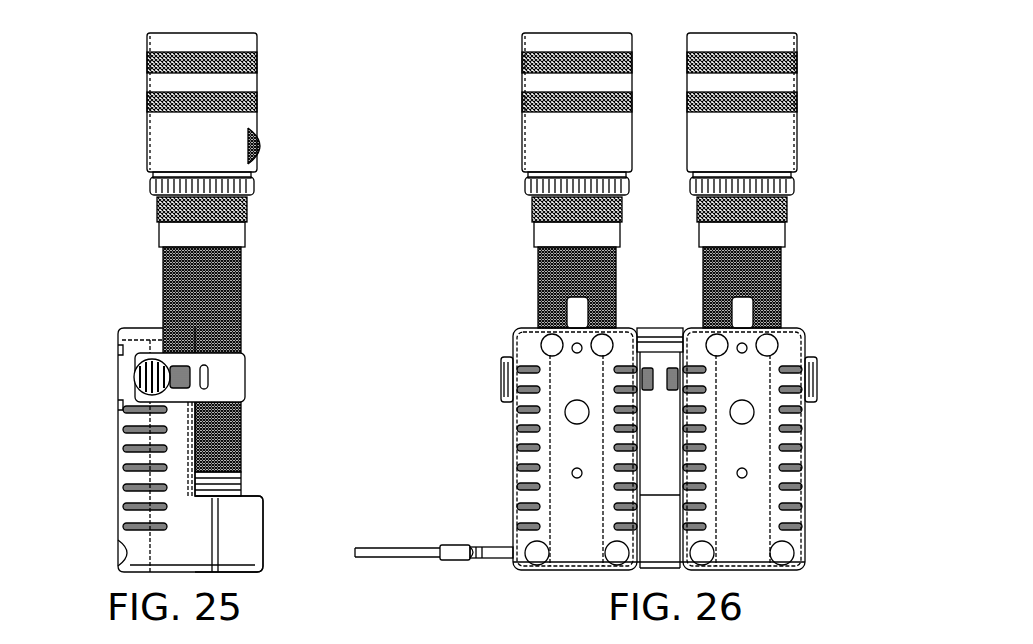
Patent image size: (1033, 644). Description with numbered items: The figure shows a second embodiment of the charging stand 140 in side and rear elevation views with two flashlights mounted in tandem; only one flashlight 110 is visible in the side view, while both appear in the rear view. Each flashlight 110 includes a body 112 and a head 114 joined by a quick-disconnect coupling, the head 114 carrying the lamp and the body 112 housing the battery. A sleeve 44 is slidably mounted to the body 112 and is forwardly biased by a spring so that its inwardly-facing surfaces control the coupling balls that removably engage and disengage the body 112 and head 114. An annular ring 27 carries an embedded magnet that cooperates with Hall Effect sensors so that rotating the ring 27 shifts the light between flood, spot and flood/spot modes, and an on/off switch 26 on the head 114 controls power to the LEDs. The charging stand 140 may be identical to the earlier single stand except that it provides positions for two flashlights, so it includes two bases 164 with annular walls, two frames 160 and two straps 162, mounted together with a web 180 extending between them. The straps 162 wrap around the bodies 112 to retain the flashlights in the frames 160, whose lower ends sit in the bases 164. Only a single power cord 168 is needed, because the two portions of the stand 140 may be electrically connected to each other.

In FIG. 25, the flashlight 110 is at (186, 264).
In FIG. 26, the flashlight 110 is at (664, 180).
In FIG. 25, the head 114 is at (148, 82).
In FIG. 26, the head 114 is at (525, 86).
In FIG. 25, the on/off switch 26 is at (259, 147).
In FIG. 25, the annular ring 27 is at (254, 186).
In FIG. 26, the annular ring 27 is at (528, 185).
In FIG. 25, the sleeve 44 is at (157, 211).
In FIG. 26, the sleeve 44 is at (530, 214).
In FIG. 25, the body 112 is at (160, 275).
In FIG. 26, the body 112 is at (538, 277).
In FIG. 25, the charging stand 140 is at (189, 450).
In FIG. 26, the charging stand 140 is at (663, 409).
In FIG. 25, the frame 160 is at (127, 487).
In FIG. 26, the frame 160 is at (800, 460).
In FIG. 25, the strap 162 is at (240, 378).
In FIG. 26, the strap 162 is at (818, 380).
In FIG. 25, the base 164 is at (262, 512).
In FIG. 26, the power cord 168 is at (458, 548).
In FIG. 26, the web 180 is at (663, 330).